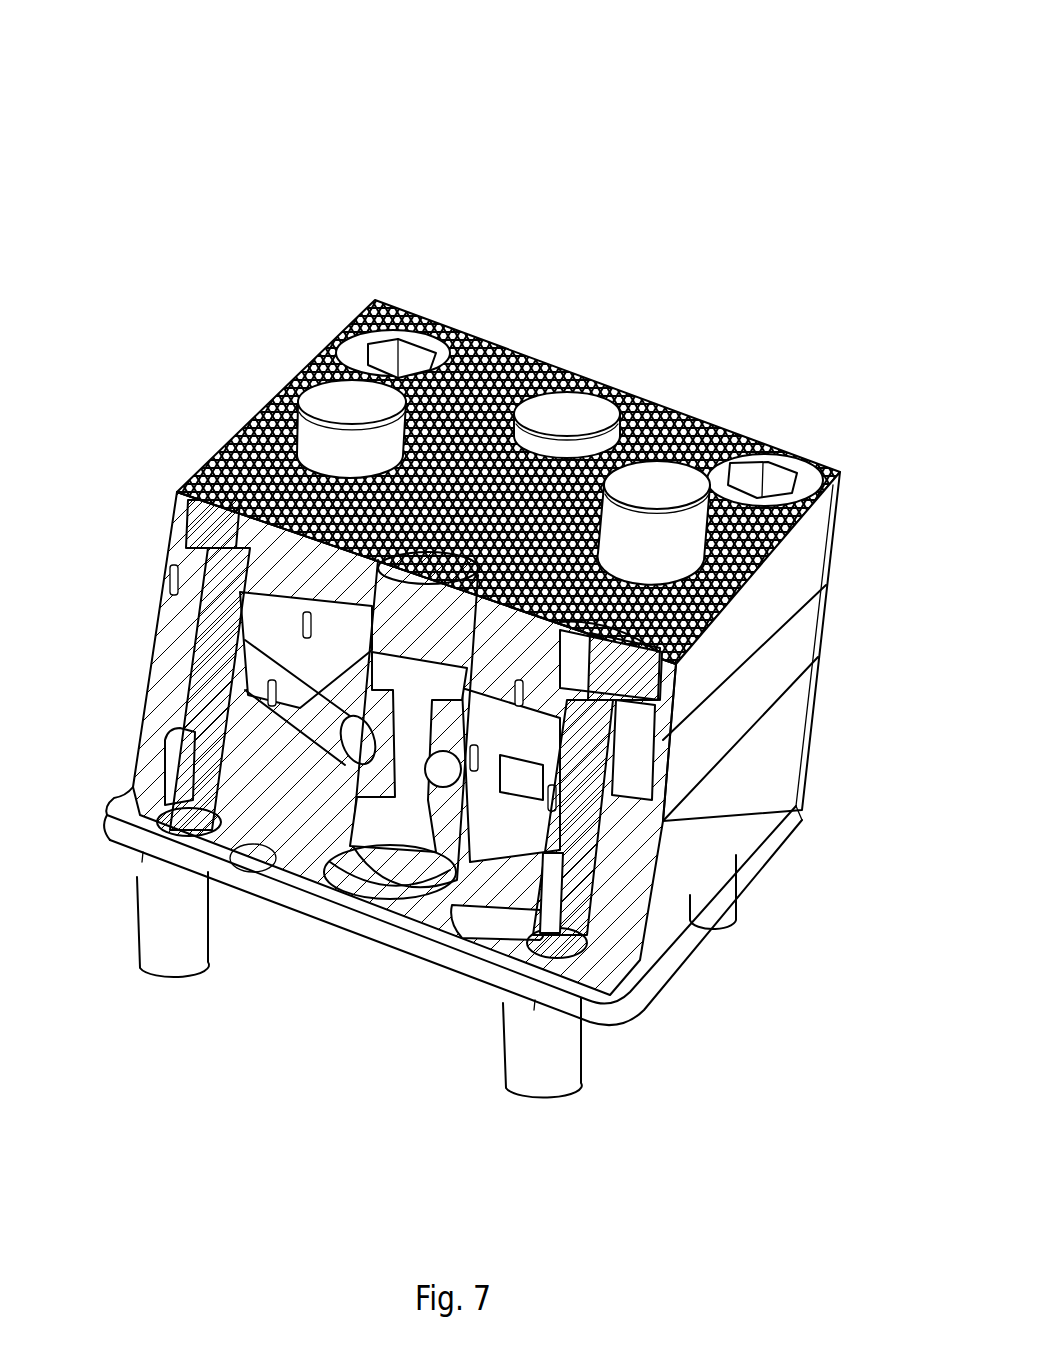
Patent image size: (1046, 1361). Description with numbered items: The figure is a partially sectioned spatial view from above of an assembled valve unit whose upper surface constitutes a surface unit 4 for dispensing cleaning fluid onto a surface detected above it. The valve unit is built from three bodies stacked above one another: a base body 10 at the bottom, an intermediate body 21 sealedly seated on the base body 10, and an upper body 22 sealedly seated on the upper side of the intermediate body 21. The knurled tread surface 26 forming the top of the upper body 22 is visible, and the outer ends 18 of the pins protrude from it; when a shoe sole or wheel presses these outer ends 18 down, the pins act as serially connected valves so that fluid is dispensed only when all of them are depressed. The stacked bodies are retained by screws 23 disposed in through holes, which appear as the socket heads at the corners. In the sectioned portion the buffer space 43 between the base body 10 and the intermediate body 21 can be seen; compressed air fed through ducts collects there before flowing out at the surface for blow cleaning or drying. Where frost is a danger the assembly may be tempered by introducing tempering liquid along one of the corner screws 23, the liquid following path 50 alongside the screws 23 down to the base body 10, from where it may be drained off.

The surface unit 4 is at (366, 180).
The base body 10 is at (676, 880).
The outer end 18 is at (672, 474).
The intermediate body 21 is at (734, 709).
The upper body 22 is at (787, 594).
The screw 23 is at (762, 478).
The tread surface 26 is at (252, 412).
The buffer space 43 is at (337, 633).
The path 50 is at (620, 762).